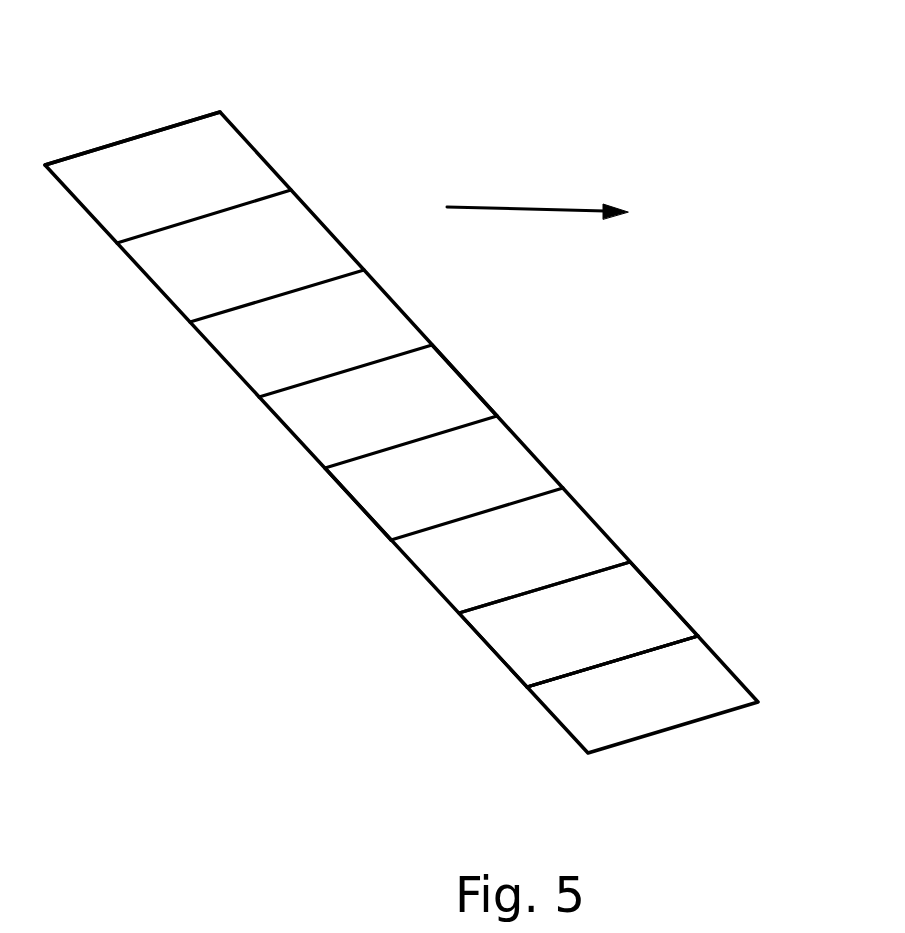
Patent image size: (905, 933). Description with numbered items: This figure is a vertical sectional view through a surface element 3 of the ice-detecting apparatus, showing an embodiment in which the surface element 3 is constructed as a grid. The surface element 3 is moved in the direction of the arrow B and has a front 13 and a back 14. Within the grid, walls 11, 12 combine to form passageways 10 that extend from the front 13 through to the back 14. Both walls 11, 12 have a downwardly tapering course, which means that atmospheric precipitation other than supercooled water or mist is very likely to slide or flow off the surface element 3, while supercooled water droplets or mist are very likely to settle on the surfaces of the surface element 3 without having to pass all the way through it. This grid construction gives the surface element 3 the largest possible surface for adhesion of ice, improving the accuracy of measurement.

The surface element 3 is at (660, 428).
The passageway 10 is at (633, 617).
The wall 11 is at (657, 650).
The wall 12 is at (138, 135).
The front 13 is at (500, 398).
The back 14 is at (328, 480).
The direction of movement B is at (555, 198).